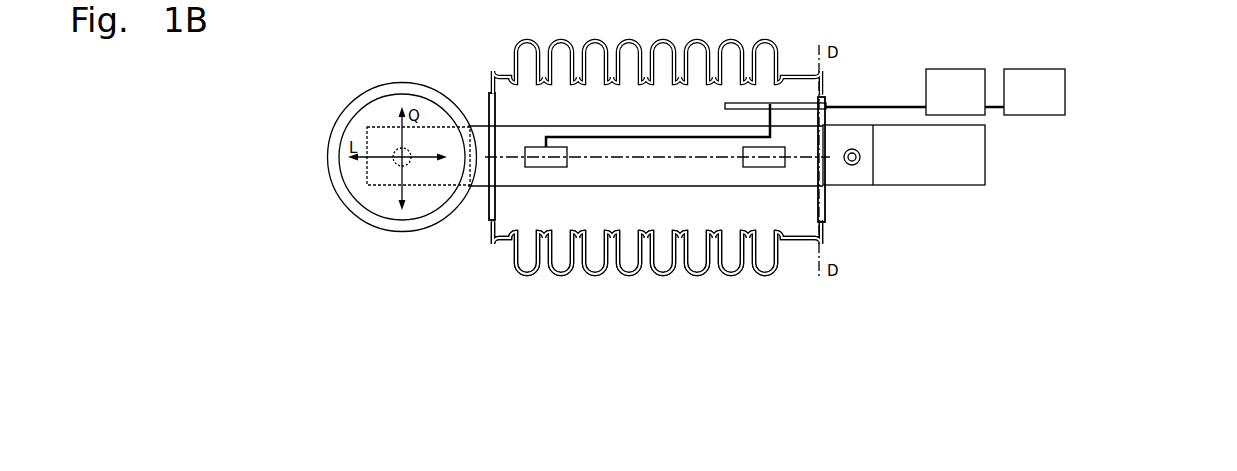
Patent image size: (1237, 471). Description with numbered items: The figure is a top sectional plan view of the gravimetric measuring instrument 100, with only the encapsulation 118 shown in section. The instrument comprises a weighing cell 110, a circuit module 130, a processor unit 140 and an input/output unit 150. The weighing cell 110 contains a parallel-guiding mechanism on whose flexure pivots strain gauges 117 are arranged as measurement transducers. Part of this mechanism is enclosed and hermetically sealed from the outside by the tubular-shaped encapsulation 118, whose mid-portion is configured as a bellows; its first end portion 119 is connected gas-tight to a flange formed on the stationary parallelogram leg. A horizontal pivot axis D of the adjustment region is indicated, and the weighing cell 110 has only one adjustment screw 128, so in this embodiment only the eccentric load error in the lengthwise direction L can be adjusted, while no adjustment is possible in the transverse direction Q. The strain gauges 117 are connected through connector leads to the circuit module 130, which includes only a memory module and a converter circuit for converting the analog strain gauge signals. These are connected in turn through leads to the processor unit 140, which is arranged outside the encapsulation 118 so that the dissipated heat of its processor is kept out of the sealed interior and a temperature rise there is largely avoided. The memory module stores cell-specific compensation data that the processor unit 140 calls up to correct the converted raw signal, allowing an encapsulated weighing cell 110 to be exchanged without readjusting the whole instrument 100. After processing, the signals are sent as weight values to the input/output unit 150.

The gravimetric measuring instrument 100 is at (1060, 189).
The weighing cell 110 is at (643, 286).
The strain gauge 117 is at (538, 158).
The encapsulation 118 is at (562, 275).
The first end portion 119 is at (849, 216).
The adjustment screw 128 is at (857, 163).
The circuit module 130 is at (797, 109).
The processor unit 140 is at (943, 101).
The input/output unit 150 is at (1022, 101).